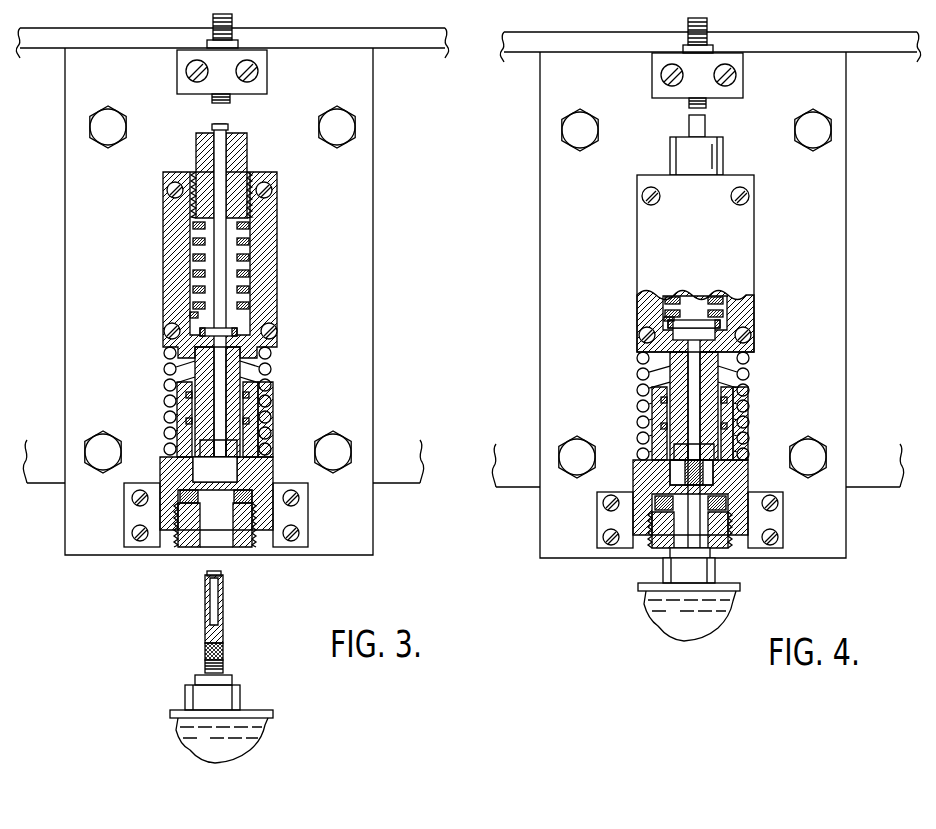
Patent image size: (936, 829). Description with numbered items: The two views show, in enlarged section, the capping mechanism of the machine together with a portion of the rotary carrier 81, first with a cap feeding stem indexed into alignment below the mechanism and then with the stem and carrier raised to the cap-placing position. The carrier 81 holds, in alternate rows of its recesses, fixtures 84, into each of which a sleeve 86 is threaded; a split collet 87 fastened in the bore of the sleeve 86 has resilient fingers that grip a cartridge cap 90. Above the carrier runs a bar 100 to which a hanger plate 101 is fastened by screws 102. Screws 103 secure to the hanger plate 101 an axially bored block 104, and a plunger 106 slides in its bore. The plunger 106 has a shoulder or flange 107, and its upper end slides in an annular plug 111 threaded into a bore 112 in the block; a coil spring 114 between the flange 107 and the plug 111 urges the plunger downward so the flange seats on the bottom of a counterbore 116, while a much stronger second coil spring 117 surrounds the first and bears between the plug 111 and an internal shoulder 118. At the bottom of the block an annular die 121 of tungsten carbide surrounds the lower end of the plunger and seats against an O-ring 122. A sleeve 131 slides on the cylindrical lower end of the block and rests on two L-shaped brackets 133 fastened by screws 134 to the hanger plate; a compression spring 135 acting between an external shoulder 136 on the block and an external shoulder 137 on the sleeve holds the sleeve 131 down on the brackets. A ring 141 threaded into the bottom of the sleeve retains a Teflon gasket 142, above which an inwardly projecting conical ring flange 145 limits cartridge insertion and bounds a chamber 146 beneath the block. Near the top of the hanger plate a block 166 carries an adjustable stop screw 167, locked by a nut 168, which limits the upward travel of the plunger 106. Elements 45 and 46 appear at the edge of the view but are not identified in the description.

In FIG. 3, the conductor 45 is at (7, 283).
In FIG. 3, the conductor 46 is at (11, 253).
In FIG. 3, the indexible drum or carrier 81 is at (272, 722).
In FIG. 4, the indexible drum or carrier 81 is at (675, 612).
In FIG. 3, the fixture 84 is at (241, 695).
In FIG. 4, the fixture 84 is at (656, 567).
In FIG. 3, the sleeve 86 is at (226, 601).
In FIG. 3, the split collet 87 is at (226, 633).
In FIG. 3, the cartridge cap 90 is at (207, 575).
In FIG. 4, the cartridge cap 90 is at (651, 443).
In FIG. 3, the bar 100 is at (41, 477).
In FIG. 4, the bar 100 is at (694, 480).
In FIG. 3, the hanger plate 101 is at (65, 195).
In FIG. 4, the hanger plate 101 is at (673, 305).
In FIG. 3, the screws 102 is at (104, 141).
In FIG. 4, the screws 102 is at (714, 293).
In FIG. 3, the screws 103 is at (169, 194).
In FIG. 4, the screws 103 is at (692, 270).
In FIG. 3, the axially bored block 104 is at (276, 247).
In FIG. 4, the axially bored block 104 is at (714, 263).
In FIG. 3, the plunger 106 is at (226, 345).
In FIG. 4, the plunger 106 is at (732, 404).
In FIG. 3, the shoulder or flange 107 is at (238, 330).
In FIG. 4, the shoulder or flange 107 is at (731, 314).
In FIG. 3, the annular plug 111 is at (247, 148).
In FIG. 4, the annular plug 111 is at (710, 145).
In FIG. 3, the bore 112 is at (252, 273).
In FIG. 3, the coil spring 114 is at (250, 290).
In FIG. 4, the coil spring 114 is at (713, 290).
In FIG. 3, the counterbore 116 is at (197, 318).
In FIG. 4, the counterbore 116 is at (636, 325).
In FIG. 3, the second coil spring 117 is at (205, 274).
In FIG. 4, the second coil spring 117 is at (640, 288).
In FIG. 3, the internal shoulder 118 is at (195, 305).
In FIG. 4, the internal shoulder 118 is at (639, 307).
In FIG. 3, the annular die 121 is at (203, 442).
In FIG. 4, the annular die 121 is at (653, 438).
In FIG. 3, the O-ring 122 is at (180, 418).
In FIG. 4, the O-ring 122 is at (662, 423).
In FIG. 3, the sleeve 131 is at (260, 476).
In FIG. 4, the sleeve 131 is at (708, 491).
In FIG. 3, the L-shaped brackets 133 is at (124, 522).
In FIG. 4, the L-shaped brackets 133 is at (688, 520).
In FIG. 3, the screws 134 is at (134, 522).
In FIG. 4, the screws 134 is at (689, 520).
In FIG. 3, the coiled compression spring 135 is at (272, 381).
In FIG. 4, the coiled compression spring 135 is at (757, 406).
In FIG. 3, the external shoulder 136 is at (164, 352).
In FIG. 4, the external shoulder 136 is at (627, 404).
In FIG. 3, the external shoulder 137 is at (269, 462).
In FIG. 4, the external shoulder 137 is at (760, 427).
In FIG. 3, the ring 141 is at (243, 552).
In FIG. 4, the ring 141 is at (711, 548).
In FIG. 3, the annular Teflon gasket 142 is at (180, 489).
In FIG. 4, the annular Teflon gasket 142 is at (724, 489).
In FIG. 3, the ring flange 145 is at (247, 492).
In FIG. 3, the chamber 146 is at (215, 469).
In FIG. 4, the chamber 146 is at (655, 472).
In FIG. 3, the block 166 is at (267, 80).
In FIG. 4, the block 166 is at (718, 75).
In FIG. 3, the adjustable stop screw 167 is at (232, 22).
In FIG. 4, the adjustable stop screw 167 is at (722, 26).
In FIG. 3, the nut 168 is at (238, 44).
In FIG. 4, the nut 168 is at (725, 45).